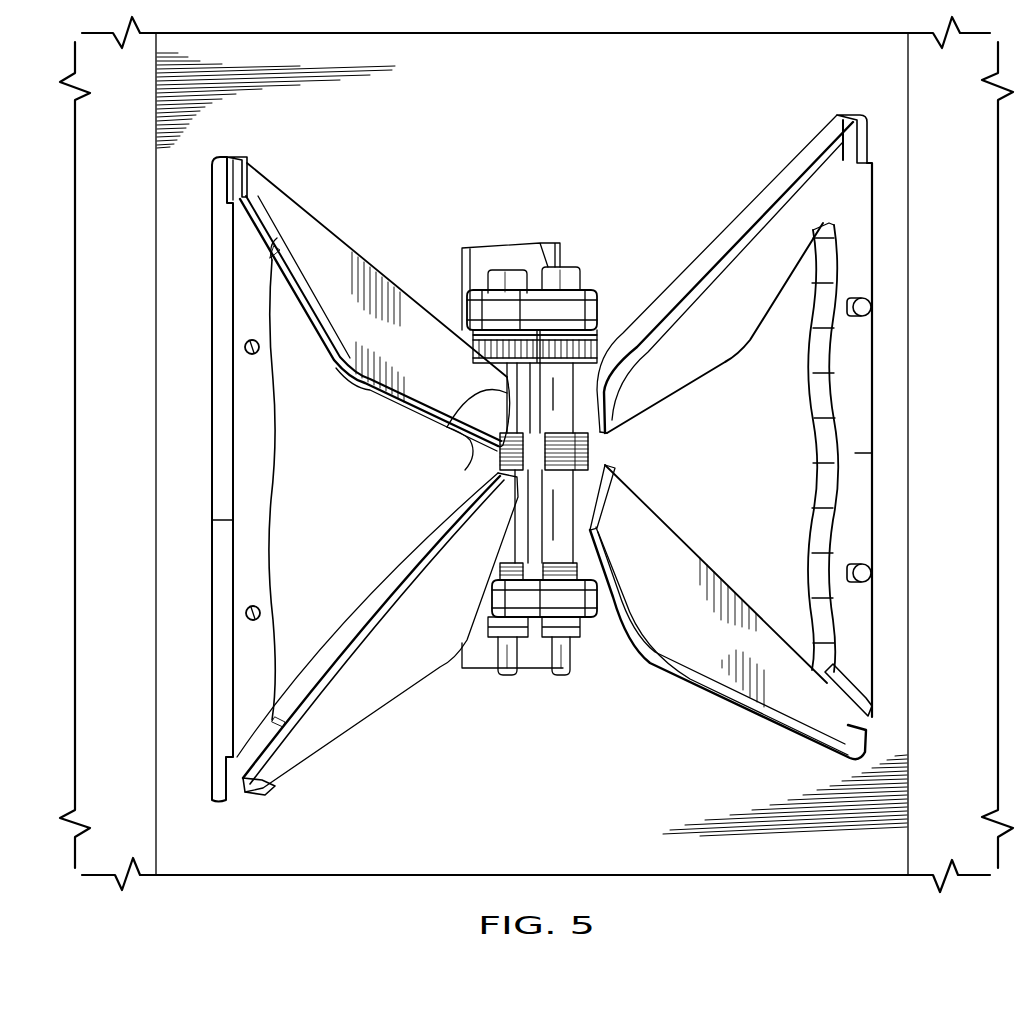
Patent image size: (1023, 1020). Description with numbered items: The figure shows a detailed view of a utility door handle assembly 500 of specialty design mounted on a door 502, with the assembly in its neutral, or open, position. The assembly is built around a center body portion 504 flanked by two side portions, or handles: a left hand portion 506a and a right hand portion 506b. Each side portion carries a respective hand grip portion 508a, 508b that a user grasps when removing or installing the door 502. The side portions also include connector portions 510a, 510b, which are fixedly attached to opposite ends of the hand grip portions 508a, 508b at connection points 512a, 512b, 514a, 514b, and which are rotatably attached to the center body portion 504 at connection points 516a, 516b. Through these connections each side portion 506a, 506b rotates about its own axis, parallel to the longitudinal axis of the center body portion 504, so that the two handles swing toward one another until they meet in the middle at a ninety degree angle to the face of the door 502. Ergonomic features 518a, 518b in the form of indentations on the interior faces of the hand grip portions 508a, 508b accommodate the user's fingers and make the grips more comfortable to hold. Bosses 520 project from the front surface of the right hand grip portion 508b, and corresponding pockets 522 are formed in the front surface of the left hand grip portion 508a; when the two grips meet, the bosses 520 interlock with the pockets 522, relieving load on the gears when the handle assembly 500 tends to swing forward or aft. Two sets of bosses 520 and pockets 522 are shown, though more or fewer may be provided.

The utility door handle assembly 500 is at (790, 112).
The door 502 is at (223, 867).
The center body portion 504 is at (506, 241).
The left hand (LH) portion 506a is at (203, 403).
The right hand (RH) portion 506b is at (880, 407).
The hand grip portion 508a is at (247, 527).
The hand grip portion 508b is at (855, 453).
The connector portion 510a is at (323, 247).
The connector portion 510b is at (733, 273).
The connection point 512a is at (257, 183).
The connection point 512b is at (850, 147).
The connection point 514a is at (262, 778).
The connection point 514b is at (835, 745).
The connection point 516a is at (510, 393).
The connection point 516b is at (567, 392).
The ergonomic feature 518a is at (273, 488).
The ergonomic feature 518b is at (818, 493).
The bosses 520 is at (871, 307).
The pockets 522 is at (262, 349).